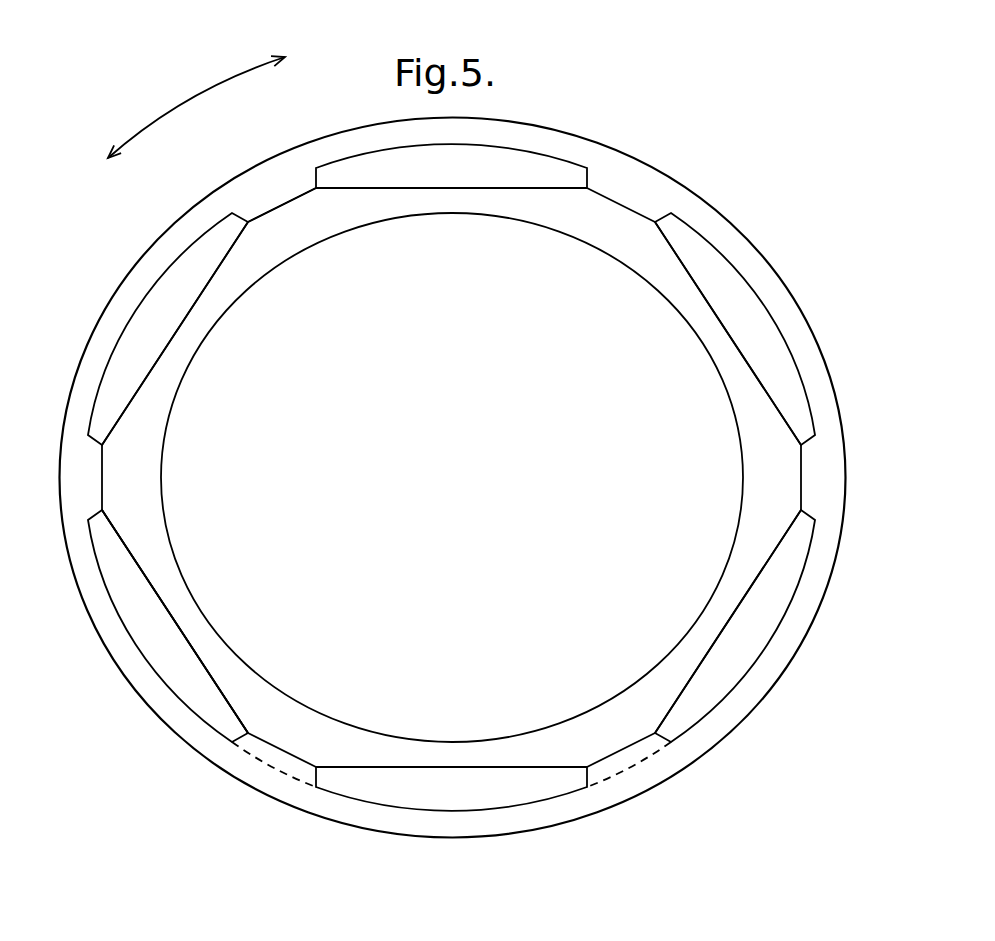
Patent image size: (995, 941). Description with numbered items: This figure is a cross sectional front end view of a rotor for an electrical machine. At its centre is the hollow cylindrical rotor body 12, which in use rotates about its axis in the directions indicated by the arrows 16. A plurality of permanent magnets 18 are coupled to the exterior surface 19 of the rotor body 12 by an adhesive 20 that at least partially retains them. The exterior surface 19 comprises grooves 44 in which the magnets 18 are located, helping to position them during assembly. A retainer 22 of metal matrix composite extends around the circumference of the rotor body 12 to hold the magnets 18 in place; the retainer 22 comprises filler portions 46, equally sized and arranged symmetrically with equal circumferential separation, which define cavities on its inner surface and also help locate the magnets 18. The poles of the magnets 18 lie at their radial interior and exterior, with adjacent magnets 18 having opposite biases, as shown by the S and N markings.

The rotor body 12 is at (295, 238).
The arrows 16 is at (200, 95).
The magnets 18 is at (537, 167).
The exterior surface 19 is at (287, 202).
The adhesive 20 is at (178, 352).
The retainer 22 is at (663, 190).
The grooves 44 is at (483, 189).
The filler portions 46 is at (268, 774).